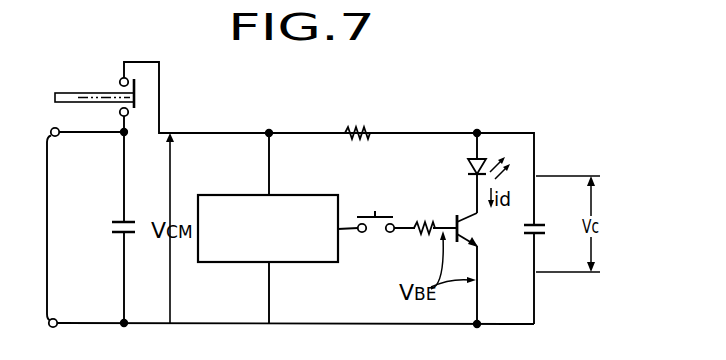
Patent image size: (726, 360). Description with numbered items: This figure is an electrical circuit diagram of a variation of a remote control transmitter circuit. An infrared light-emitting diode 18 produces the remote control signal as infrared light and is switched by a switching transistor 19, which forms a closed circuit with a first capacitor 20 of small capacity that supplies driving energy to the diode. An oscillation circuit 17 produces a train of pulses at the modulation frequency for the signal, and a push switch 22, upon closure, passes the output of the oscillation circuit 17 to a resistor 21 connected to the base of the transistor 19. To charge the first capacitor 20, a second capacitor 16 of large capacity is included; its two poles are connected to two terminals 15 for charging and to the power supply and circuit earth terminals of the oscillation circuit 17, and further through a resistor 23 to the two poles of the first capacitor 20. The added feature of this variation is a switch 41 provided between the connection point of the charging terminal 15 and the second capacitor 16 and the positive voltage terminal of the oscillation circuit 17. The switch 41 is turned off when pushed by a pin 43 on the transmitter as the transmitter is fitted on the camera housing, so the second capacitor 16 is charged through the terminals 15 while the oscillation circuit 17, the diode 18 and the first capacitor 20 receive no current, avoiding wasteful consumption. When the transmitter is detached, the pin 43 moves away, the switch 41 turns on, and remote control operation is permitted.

The terminals for charging 15 is at (44, 224).
The second capacitor 16 is at (110, 228).
The oscillation circuit 17 is at (226, 194).
The infrared light-emitting diode 18 is at (466, 168).
The switching transistor 19 is at (476, 233).
The first capacitor 20 is at (547, 231).
The resistor 21 is at (422, 221).
The push switch 22 is at (376, 234).
The resistor 23 is at (365, 128).
The switch 41 is at (135, 109).
The pin 43 is at (63, 92).